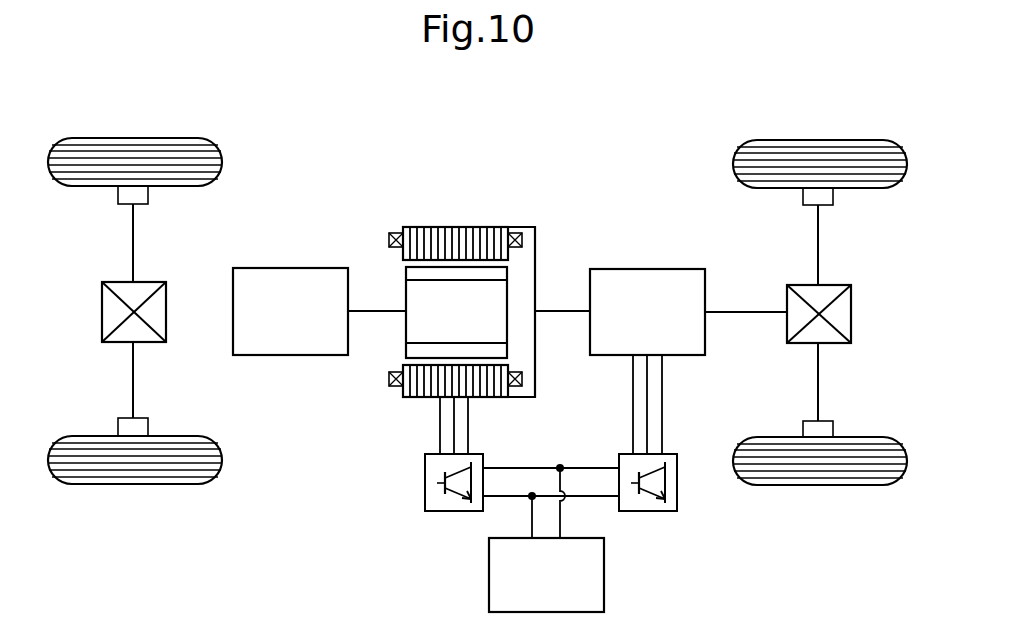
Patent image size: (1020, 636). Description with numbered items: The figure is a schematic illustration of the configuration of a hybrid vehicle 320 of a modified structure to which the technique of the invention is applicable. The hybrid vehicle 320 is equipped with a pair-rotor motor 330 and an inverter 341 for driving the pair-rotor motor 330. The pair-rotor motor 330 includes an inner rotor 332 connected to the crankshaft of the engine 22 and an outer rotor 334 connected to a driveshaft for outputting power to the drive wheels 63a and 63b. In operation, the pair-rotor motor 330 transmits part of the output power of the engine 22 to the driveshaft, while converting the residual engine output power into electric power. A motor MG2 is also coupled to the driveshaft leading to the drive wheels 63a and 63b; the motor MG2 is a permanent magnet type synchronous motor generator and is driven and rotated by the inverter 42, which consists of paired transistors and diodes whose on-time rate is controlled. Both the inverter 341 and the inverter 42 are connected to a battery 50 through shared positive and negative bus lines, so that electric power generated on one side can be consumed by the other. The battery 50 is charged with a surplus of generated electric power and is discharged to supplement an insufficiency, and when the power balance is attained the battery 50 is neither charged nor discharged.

The hybrid vehicle 320 is at (531, 120).
The engine 22 is at (290, 268).
The pair-rotor motor 330 is at (362, 142).
The inner rotor 332 is at (405, 293).
The outer rotor 334 is at (462, 227).
The motor MG2 is at (648, 269).
The drive wheel 63a is at (818, 140).
The drive wheel 63b is at (818, 487).
The inverter 341 is at (425, 483).
The inverter 42 is at (677, 483).
The battery 50 is at (604, 576).